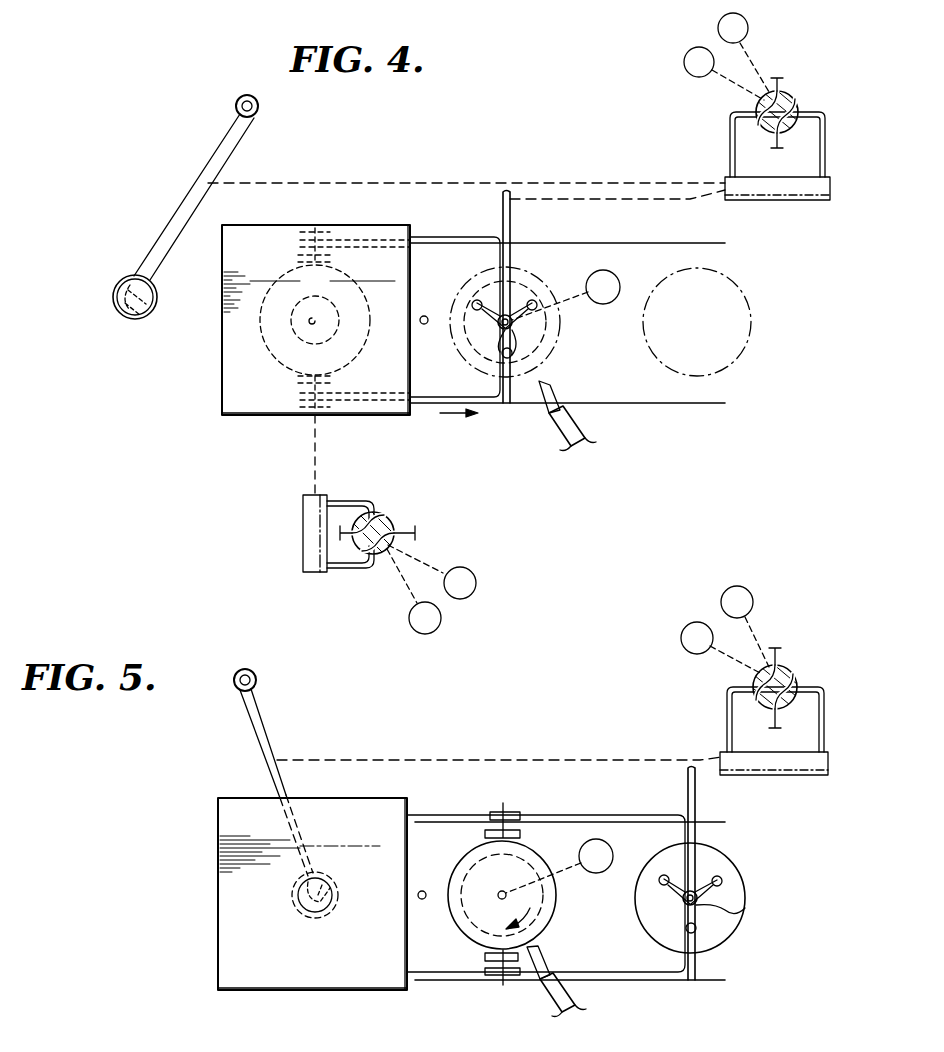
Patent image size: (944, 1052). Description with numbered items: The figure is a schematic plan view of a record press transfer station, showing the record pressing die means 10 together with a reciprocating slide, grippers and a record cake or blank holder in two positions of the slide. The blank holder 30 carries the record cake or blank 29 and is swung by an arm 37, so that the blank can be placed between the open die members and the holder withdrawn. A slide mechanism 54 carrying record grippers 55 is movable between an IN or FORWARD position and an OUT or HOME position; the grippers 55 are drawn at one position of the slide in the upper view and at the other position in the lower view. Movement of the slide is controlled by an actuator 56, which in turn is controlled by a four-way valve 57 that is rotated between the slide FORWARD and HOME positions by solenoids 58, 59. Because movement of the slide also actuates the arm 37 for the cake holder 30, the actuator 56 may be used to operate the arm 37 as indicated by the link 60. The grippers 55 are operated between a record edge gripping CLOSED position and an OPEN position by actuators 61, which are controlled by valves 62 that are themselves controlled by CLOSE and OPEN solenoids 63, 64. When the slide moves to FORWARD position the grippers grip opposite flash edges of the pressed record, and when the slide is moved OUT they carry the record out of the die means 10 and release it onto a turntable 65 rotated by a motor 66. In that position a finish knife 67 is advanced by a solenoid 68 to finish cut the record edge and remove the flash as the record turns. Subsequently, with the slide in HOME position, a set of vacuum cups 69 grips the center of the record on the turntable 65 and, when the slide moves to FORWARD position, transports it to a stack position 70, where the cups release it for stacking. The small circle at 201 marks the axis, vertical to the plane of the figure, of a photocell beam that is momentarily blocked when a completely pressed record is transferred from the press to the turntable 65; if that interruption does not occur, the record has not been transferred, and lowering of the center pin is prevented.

In FIG. 4, the record pressing die means 10 is at (215, 373).
In FIG. 5, the record pressing die means 10 is at (216, 852).
In FIG. 4, the record cake or blank 29 is at (120, 308).
In FIG. 5, the record cake or blank 29 is at (326, 912).
In FIG. 4, the blank holder 30 is at (116, 283).
In FIG. 5, the blank holder 30 is at (294, 914).
In FIG. 4, the arm 37 is at (203, 182).
In FIG. 5, the arm 37 is at (272, 742).
In FIG. 4, the slide mechanism 54 is at (512, 228).
In FIG. 5, the slide mechanism 54 is at (698, 801).
In FIG. 4, the record grippers 55 is at (300, 256).
In FIG. 5, the record grippers 55 is at (485, 833).
In FIG. 4, the actuator 56 is at (832, 190).
In FIG. 5, the actuator 56 is at (830, 765).
In FIG. 4, the four-way valve 57 is at (799, 102).
In FIG. 5, the four-way valve 57 is at (797, 678).
In FIG. 4, the solenoid 58 is at (684, 62).
In FIG. 5, the solenoid 58 is at (681, 639).
In FIG. 4, the solenoid 59 is at (749, 30).
In FIG. 5, the solenoid 59 is at (753, 603).
In FIG. 4, the link 60 is at (404, 183).
In FIG. 4, the actuators 61 is at (303, 533).
In FIG. 4, the valves 62 is at (386, 520).
In FIG. 4, the CLOSE solenoid 63 is at (410, 623).
In FIG. 4, the OPEN solenoid 64 is at (478, 583).
In FIG. 4, the turntable 65 is at (545, 322).
In FIG. 5, the turntable 65 is at (543, 897).
In FIG. 4, the motor 66 is at (612, 274).
In FIG. 5, the motor 66 is at (612, 848).
In FIG. 4, the finish knife 67 is at (548, 388).
In FIG. 5, the finish knife 67 is at (546, 960).
In FIG. 4, the solenoid 68 is at (553, 427).
In FIG. 5, the solenoid 68 is at (553, 1006).
In FIG. 4, the vacuum cups 69 is at (485, 316).
In FIG. 5, the vacuum cups 69 is at (696, 929).
In FIG. 4, the stack position 70 is at (750, 303).
In FIG. 5, the stack position 70 is at (746, 878).
In FIG. 4, the photocell beam axis 201 is at (426, 316).
In FIG. 5, the photocell beam axis 201 is at (424, 891).